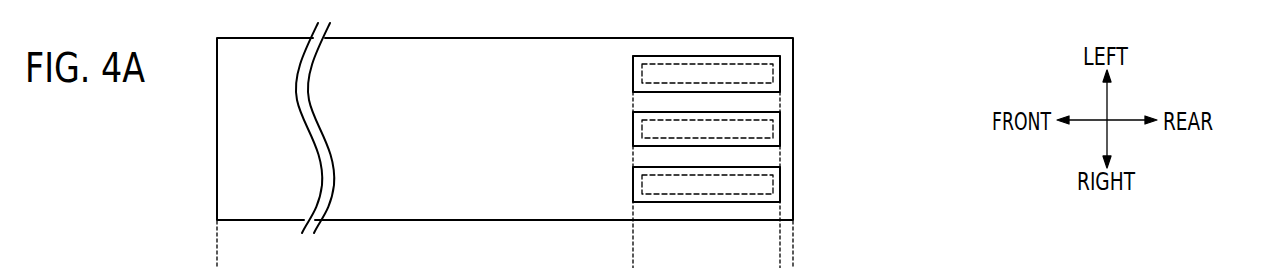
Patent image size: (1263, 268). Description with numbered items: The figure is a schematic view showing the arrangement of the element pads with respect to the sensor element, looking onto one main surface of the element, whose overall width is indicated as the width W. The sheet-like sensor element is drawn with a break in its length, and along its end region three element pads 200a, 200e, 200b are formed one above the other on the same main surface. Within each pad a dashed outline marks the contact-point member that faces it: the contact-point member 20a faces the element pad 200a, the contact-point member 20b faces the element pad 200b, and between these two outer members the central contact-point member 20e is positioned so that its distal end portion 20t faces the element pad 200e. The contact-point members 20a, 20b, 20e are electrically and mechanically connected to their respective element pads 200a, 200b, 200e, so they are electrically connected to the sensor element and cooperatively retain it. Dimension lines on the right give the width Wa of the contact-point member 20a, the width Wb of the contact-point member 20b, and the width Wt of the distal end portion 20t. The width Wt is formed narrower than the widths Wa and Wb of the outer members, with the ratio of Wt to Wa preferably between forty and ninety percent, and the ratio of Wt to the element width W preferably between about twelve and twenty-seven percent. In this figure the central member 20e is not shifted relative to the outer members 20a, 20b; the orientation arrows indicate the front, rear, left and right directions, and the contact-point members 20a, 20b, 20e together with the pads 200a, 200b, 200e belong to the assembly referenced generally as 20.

The separator sheet 20 is at (505, 145).
The element pad 200a is at (633, 58).
The contact-point member 20a is at (652, 75).
The element pad 200e is at (633, 117).
The contact-point member 20e is at (586, 143).
The distal end portion 20t is at (652, 130).
The element pad 200b is at (633, 168).
The contact-point member 20b is at (652, 185).
The width of the sensor element W is at (252, 40).
The width of the contact-point member Wa is at (780, 64).
The width of the distal end portion Wt is at (780, 138).
The width of the contact-point member Wb is at (780, 175).